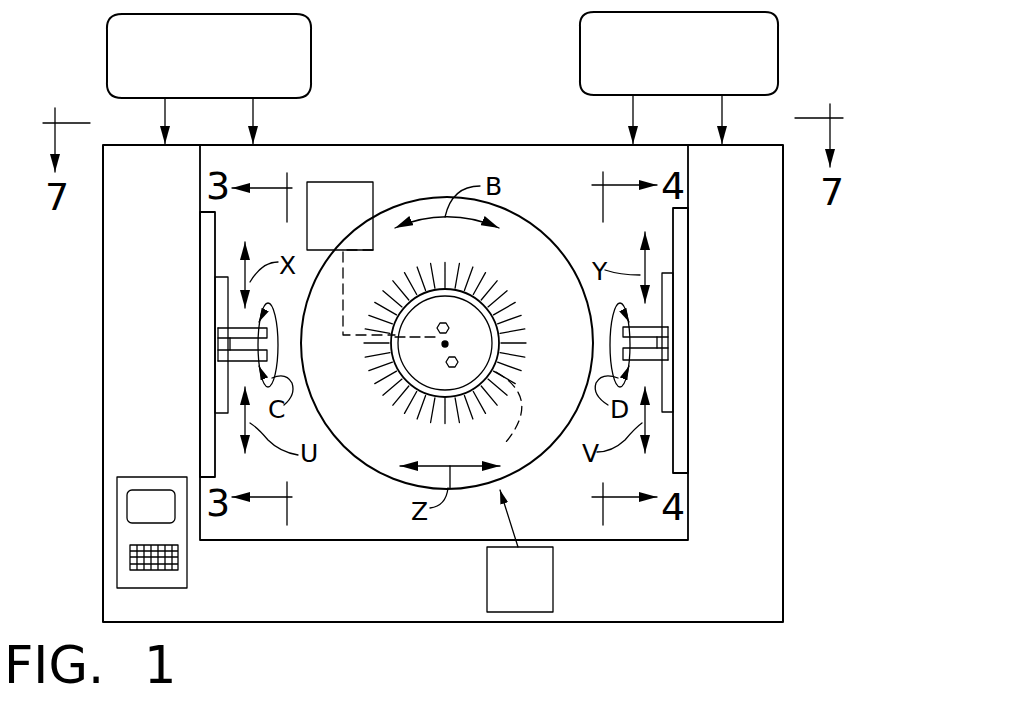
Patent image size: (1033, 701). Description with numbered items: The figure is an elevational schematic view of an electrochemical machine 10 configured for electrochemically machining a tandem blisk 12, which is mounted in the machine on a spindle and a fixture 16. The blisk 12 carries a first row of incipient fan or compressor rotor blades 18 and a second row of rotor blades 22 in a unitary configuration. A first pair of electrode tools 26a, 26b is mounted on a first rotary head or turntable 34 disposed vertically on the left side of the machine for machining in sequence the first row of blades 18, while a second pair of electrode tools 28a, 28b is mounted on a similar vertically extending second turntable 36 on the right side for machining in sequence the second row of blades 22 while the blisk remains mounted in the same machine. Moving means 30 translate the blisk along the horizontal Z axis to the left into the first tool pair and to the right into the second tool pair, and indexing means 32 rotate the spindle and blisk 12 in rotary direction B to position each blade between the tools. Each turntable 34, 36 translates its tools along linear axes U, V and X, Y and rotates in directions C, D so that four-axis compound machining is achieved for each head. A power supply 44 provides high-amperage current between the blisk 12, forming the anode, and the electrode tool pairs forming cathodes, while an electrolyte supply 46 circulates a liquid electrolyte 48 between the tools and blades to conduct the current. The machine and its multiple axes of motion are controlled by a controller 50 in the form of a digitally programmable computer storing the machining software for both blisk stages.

The electrochemical machine 10 is at (806, 290).
The tandem blisk 12 is at (538, 322).
The fixture 16 is at (486, 352).
The first row of rotor blades 18 is at (380, 370).
The second row of rotor blades 22 is at (494, 413).
The first electrode tool 26a is at (238, 366).
The first electrode tool 26b is at (238, 324).
The second electrode tool 28a is at (655, 366).
The second electrode tool 28b is at (655, 324).
The moving means 30 is at (539, 590).
The rotating or indexing means 32 is at (355, 218).
The first rotary head or turntable 34 is at (216, 236).
The second rotary head or turntable 36 is at (673, 233).
The power supply 44 is at (312, 40).
The electrolyte supply 46 is at (580, 58).
The liquid electrolyte 48 is at (722, 110).
The controller 50 is at (117, 532).